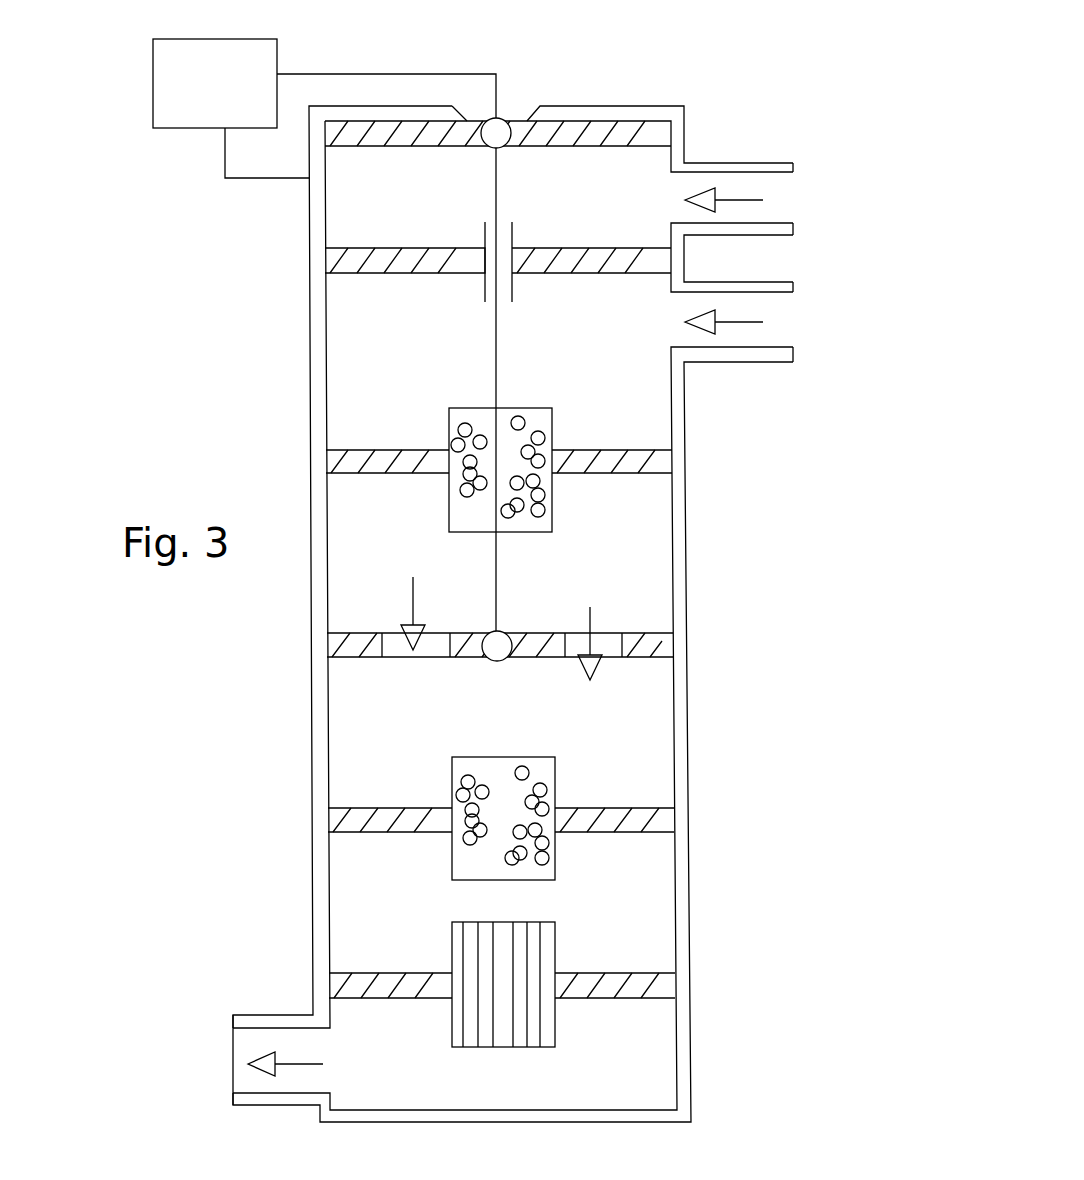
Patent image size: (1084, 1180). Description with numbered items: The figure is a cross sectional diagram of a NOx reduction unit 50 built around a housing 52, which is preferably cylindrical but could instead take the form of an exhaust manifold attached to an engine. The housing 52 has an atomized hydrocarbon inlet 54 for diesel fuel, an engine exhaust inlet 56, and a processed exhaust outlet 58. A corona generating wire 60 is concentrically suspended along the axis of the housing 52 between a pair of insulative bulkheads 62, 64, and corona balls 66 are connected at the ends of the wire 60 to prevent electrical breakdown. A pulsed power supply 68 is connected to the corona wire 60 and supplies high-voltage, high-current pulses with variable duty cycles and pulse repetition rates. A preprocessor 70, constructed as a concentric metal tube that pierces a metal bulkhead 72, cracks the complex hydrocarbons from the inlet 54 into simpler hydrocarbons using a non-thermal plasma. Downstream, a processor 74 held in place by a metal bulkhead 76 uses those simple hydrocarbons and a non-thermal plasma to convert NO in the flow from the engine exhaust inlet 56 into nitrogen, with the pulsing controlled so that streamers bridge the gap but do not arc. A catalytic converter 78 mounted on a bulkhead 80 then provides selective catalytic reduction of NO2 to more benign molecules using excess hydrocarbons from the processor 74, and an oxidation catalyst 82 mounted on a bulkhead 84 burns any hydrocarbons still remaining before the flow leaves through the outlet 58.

The NOx reduction unit 50 is at (98, 45).
The cylindrical housing 52 is at (310, 340).
The atomized hydrocarbon inlet 54 is at (775, 163).
The engine exhaust inlet 56 is at (718, 370).
The processed exhaust outlet 58 is at (306, 1015).
The corona generating wire 60 is at (494, 166).
The insulative bulkhead 62 is at (425, 148).
The insulative bulkhead 64 is at (545, 633).
The corona ball 66 is at (504, 146).
The pulsed power supply 68 is at (233, 39).
The preprocessor 70 is at (513, 240).
The metal bulkhead 72 is at (434, 275).
The processor 74 is at (475, 408).
The metal bulkhead 76 is at (430, 450).
The catalytic converter 78 is at (557, 747).
The bulkhead 80 is at (613, 808).
The oxidation catalyst 82 is at (557, 947).
The bulkhead 84 is at (612, 973).